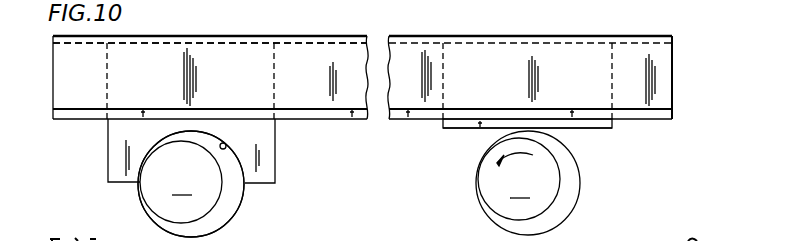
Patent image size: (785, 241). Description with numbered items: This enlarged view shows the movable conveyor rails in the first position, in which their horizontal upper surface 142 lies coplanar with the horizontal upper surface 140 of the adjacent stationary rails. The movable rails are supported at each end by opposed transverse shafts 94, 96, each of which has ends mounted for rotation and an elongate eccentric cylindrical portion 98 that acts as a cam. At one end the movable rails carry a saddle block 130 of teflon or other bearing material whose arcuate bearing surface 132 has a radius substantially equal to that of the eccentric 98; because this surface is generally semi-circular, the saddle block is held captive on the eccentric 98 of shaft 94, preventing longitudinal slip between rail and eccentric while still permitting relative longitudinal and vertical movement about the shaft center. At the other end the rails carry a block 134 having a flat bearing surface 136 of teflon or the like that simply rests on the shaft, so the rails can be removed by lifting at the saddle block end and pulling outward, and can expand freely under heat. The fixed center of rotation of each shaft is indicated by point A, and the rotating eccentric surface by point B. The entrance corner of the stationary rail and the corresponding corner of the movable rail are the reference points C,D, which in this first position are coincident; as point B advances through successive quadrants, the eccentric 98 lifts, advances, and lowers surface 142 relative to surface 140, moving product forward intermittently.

The horizontal upper surface of stationary rail 140 is at (258, 37).
The horizontal upper surface of movable rail 142 is at (325, 37).
The reference points C and D C,D is at (670, 36).
The block 134 is at (613, 125).
The flat bearing surface 136 is at (588, 129).
The saddle block 130 is at (275, 160).
The arcuate bearing surface 132 is at (225, 144).
The transverse shaft 96 is at (140, 192).
The eccentric cylindrical portion 98 is at (236, 215).
The point B is at (243, 197).
The transverse shaft 94 is at (478, 181).